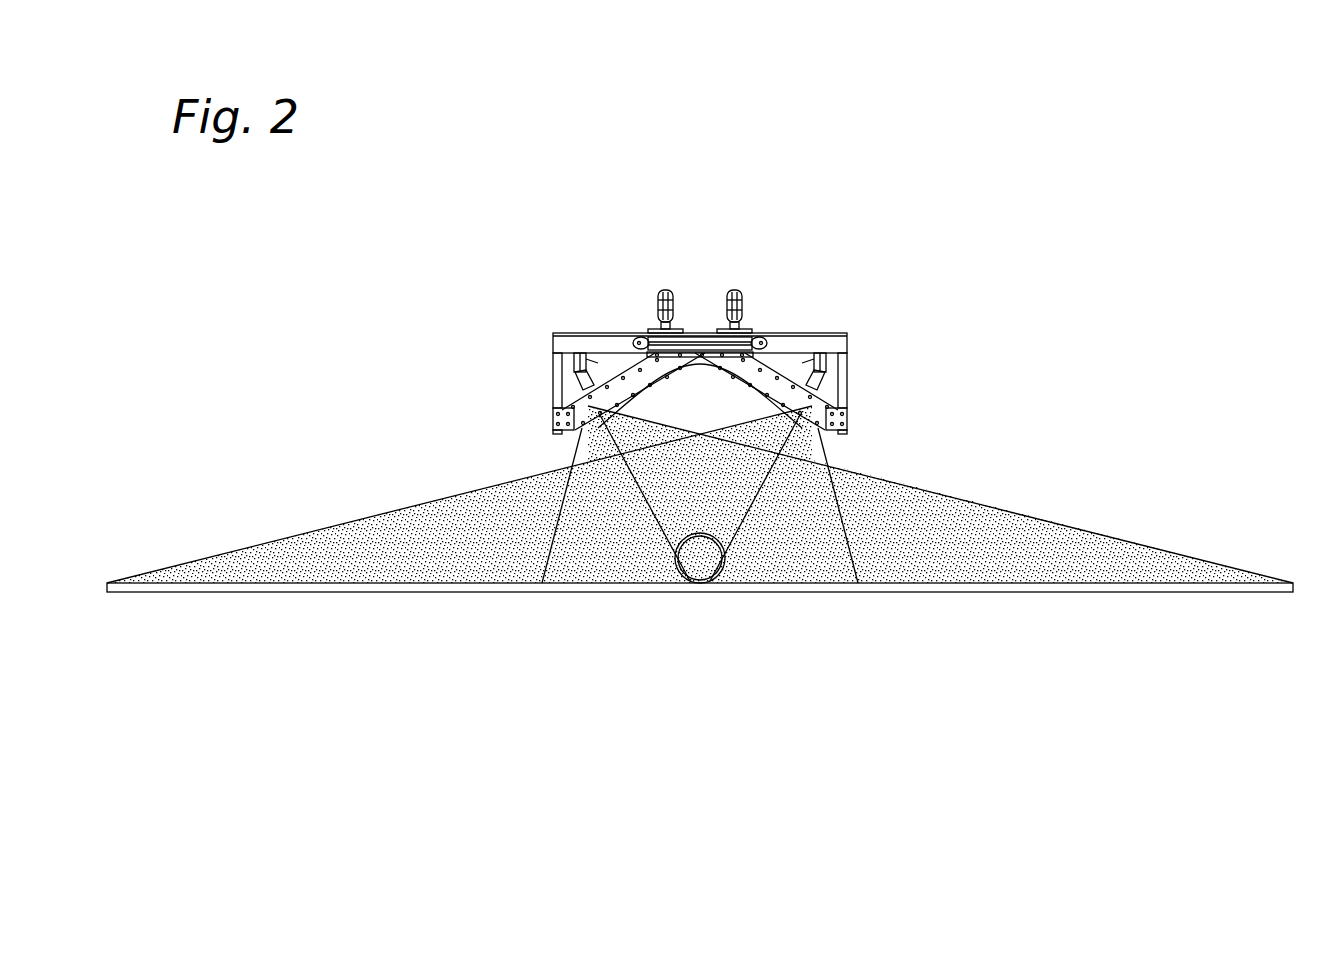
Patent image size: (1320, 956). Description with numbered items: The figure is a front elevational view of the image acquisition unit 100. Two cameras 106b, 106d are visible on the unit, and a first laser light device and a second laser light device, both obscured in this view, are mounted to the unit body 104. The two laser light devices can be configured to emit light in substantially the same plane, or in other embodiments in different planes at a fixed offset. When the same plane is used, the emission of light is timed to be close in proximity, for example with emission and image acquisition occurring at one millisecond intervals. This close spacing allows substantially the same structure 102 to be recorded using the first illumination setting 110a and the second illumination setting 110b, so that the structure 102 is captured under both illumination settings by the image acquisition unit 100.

The image acquisition unit 100 is at (700, 308).
The structure 102 is at (723, 547).
The unit body 104 is at (805, 341).
The camera 106b is at (570, 376).
The camera 106d is at (835, 372).
The first illumination setting 110a is at (1002, 547).
The second illumination setting 110b is at (398, 547).